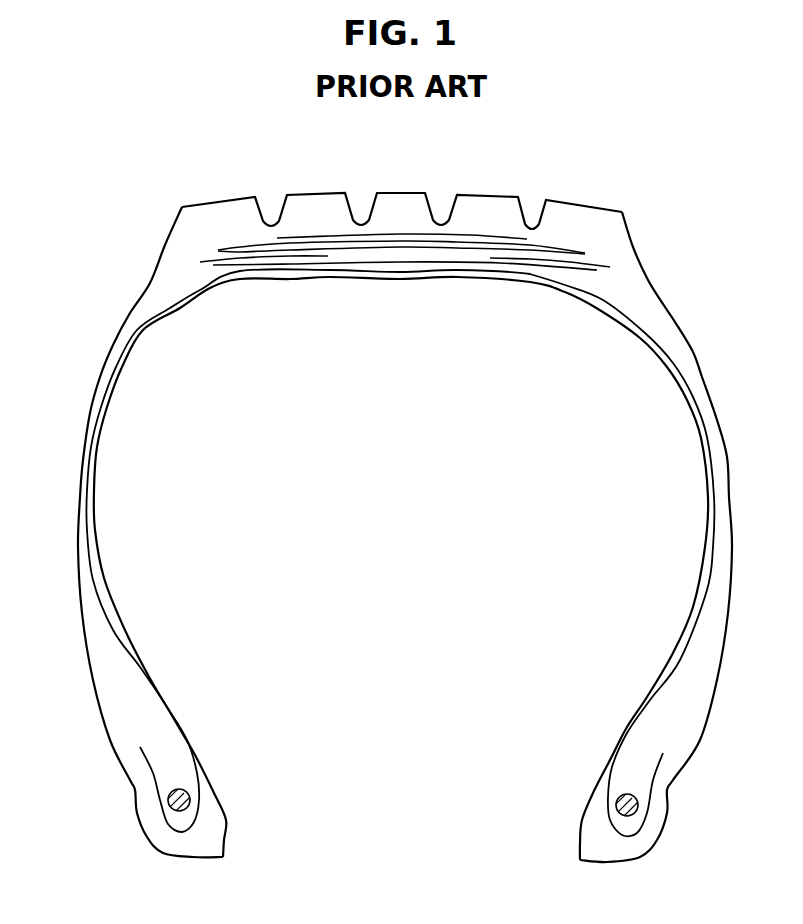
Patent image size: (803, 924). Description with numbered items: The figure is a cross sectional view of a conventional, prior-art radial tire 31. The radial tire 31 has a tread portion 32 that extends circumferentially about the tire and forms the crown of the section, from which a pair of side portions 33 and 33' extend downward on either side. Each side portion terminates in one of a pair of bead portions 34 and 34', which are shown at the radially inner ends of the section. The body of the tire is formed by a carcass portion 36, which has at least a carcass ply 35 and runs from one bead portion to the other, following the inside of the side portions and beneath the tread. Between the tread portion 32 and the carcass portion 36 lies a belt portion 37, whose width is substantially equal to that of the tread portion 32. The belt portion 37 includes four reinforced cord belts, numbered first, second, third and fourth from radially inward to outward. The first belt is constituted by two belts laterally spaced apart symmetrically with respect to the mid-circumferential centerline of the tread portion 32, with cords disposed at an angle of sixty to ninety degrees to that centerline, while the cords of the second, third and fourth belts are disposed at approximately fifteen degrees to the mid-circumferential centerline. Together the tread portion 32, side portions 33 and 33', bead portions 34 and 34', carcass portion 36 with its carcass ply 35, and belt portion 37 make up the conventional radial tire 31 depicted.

The radial tire 31 is at (611, 189).
The tread portion 32 is at (492, 205).
The side portion 33 is at (132, 532).
The side portion 33' is at (660, 537).
The bead portion 34 is at (186, 779).
The bead portion 34' is at (604, 790).
The carcass ply 35 is at (120, 375).
The carcass portion 36 is at (640, 331).
The belt portion 37 is at (575, 241).